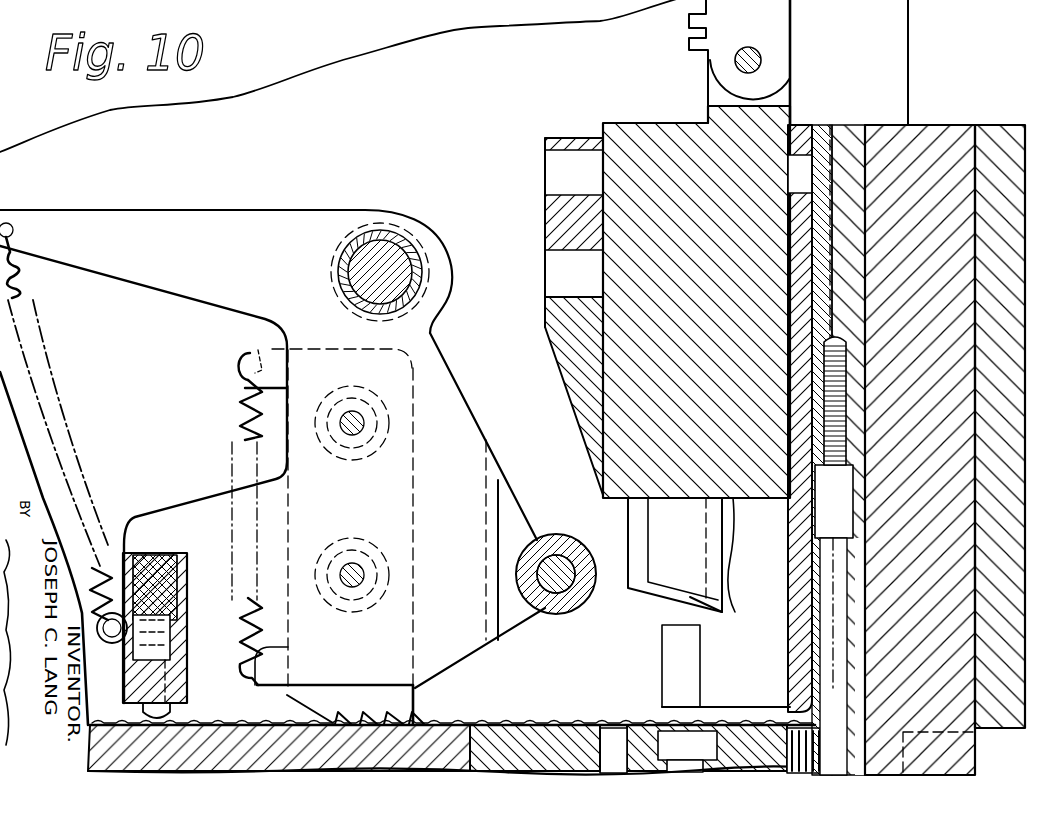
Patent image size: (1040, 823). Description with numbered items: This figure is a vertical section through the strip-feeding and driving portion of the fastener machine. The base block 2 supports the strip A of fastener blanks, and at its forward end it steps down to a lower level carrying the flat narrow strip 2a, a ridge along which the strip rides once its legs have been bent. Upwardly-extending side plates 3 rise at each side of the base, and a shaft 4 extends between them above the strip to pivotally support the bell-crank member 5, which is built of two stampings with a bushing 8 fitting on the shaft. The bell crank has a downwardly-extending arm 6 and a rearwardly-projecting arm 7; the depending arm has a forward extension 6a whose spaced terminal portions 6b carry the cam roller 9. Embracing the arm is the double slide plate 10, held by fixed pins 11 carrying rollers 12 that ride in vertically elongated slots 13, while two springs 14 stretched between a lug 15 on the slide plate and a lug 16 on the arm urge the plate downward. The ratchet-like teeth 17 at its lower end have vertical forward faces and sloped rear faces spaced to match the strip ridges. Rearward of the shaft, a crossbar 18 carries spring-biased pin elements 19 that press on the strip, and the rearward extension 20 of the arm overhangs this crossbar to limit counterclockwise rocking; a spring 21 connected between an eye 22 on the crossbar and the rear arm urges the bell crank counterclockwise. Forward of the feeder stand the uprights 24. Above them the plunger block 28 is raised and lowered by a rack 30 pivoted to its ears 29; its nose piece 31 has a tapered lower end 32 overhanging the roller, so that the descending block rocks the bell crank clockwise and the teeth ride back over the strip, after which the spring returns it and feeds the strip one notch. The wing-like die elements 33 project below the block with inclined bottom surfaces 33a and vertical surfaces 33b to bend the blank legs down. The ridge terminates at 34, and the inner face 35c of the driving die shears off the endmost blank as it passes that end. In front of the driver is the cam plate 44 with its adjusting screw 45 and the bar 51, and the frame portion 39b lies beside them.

The base block 2 is at (447, 742).
The flat narrow strip 2a is at (552, 742).
The side plates 3 is at (442, 36).
The shaft 4 is at (406, 265).
The bell-crank member 5 is at (376, 213).
The downwardly-extending arm 6 is at (400, 368).
The forward extension 6a is at (479, 446).
The terminal portions 6b is at (533, 622).
The rearwardly-projecting arm 7 is at (128, 217).
The bushing 8 is at (420, 289).
The cam roller 9 is at (566, 560).
The slide plate 10 is at (416, 522).
The fixed pins 11 is at (360, 425).
The rollers 12 is at (376, 405).
The vertically elongated slots 13 is at (378, 455).
The springs 14 is at (235, 422).
The lug 15 is at (262, 352).
The lug 16 is at (258, 683).
The ratchet-like teeth 17 is at (400, 701).
The crossbar 18 is at (182, 665).
The spring biased pin elements 19 is at (142, 714).
The rearward extension 20 is at (171, 517).
The spring 21 is at (30, 288).
The eye 22 is at (108, 643).
The uprights 24 is at (662, 658).
The block 28 is at (672, 128).
The ears 29 is at (790, 99).
The rack 30 is at (791, 26).
The nose piece 31 is at (545, 238).
The tapered lower end 32 is at (590, 452).
The wing-like die elements 33 is at (715, 522).
The inclined bottom surfaces 33a is at (678, 607).
The vertical surfaces 33b is at (628, 526).
The end of ridge 34 is at (790, 760).
The inner face 35c is at (795, 678).
The frame 39b is at (998, 132).
The cam plate 44 is at (840, 130).
The screw 45 is at (822, 425).
The bar 51 is at (945, 130).
The strip A is at (196, 720).